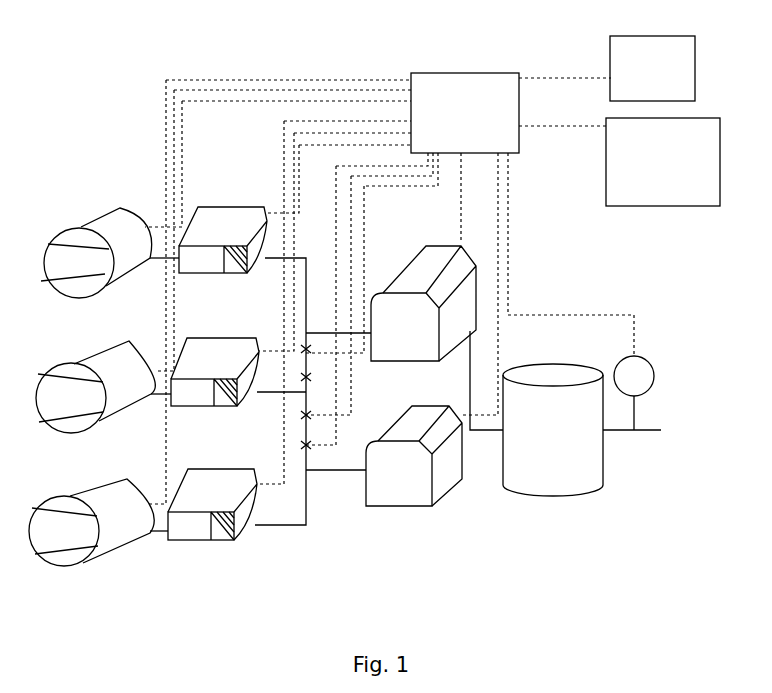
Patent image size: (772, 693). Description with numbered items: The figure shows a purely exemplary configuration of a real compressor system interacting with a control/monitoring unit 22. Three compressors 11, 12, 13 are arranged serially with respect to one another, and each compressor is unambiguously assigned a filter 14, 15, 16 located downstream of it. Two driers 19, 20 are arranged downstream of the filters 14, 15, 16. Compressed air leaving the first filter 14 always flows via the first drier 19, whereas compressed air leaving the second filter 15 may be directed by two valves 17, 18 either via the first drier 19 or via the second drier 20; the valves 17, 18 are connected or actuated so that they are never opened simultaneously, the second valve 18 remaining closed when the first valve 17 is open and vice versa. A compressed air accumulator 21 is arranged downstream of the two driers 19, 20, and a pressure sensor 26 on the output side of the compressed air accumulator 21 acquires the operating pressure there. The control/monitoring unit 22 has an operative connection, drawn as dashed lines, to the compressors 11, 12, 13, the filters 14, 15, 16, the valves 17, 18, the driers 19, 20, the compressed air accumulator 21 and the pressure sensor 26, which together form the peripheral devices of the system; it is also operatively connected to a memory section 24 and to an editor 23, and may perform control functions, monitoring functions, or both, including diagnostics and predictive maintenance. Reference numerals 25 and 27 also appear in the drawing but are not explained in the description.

The first compressor 11 is at (88, 286).
The second compressor 12 is at (92, 420).
The third compressor 13 is at (118, 545).
The first filter 14 is at (212, 270).
The second filter 15 is at (214, 404).
The third filter 16 is at (200, 538).
The first valve 17 is at (316, 354).
The second valve 18 is at (320, 382).
The first drier 19 is at (424, 356).
The second drier 20 is at (416, 503).
The compressed air accumulator 21 is at (552, 485).
The control/monitoring unit 22 is at (460, 86).
The editor 23 is at (719, 160).
The memory section 24 is at (694, 60).
The junction 25 is at (311, 422).
The pressure sensor 26 is at (652, 363).
The junction 27 is at (322, 449).